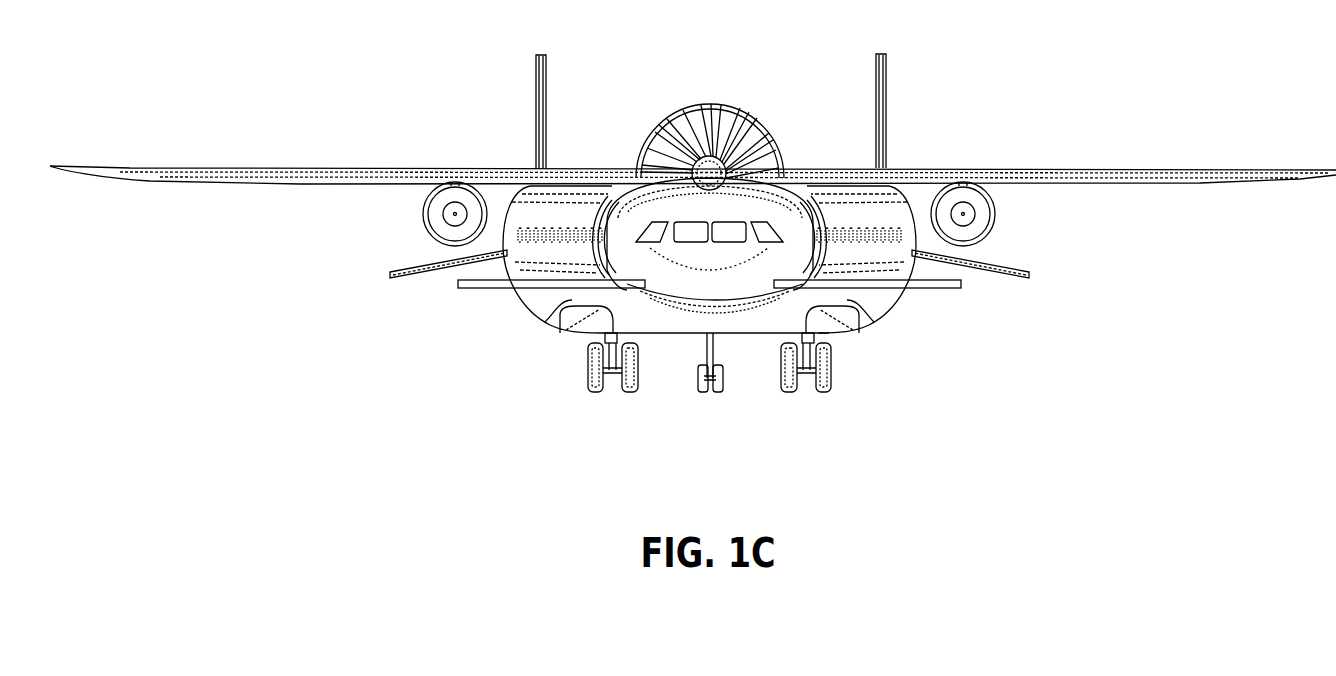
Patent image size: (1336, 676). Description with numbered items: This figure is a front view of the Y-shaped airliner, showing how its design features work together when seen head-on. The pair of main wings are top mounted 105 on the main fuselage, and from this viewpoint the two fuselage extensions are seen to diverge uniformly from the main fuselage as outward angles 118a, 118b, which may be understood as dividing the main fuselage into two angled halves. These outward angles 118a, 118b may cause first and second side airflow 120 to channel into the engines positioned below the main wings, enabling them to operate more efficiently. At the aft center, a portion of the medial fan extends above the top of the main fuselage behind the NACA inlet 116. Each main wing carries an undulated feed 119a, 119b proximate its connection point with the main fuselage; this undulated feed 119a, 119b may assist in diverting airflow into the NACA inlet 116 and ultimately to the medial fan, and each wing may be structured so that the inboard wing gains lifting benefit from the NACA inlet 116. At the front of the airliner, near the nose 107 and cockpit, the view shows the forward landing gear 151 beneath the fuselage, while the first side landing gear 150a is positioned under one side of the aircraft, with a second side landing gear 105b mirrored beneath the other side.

The top mounted 105 is at (256, 168).
The left main landing gear 105b is at (588, 364).
The nose 107 is at (713, 296).
The NACA inlet 116 is at (720, 102).
The outward angle 118a is at (843, 300).
The outward angle 118b is at (577, 302).
The undulated feed 119a is at (822, 166).
The undulated feed 119b is at (598, 168).
The side airflow 120 is at (628, 178).
The first side landing gear 150a is at (838, 373).
The forward landing gear 151 is at (700, 370).